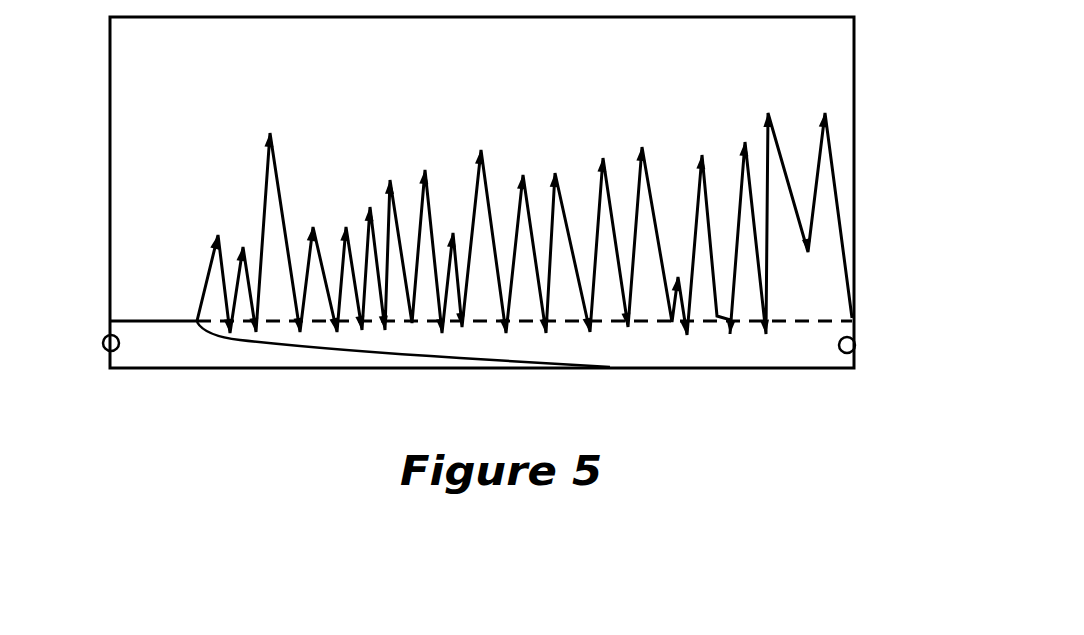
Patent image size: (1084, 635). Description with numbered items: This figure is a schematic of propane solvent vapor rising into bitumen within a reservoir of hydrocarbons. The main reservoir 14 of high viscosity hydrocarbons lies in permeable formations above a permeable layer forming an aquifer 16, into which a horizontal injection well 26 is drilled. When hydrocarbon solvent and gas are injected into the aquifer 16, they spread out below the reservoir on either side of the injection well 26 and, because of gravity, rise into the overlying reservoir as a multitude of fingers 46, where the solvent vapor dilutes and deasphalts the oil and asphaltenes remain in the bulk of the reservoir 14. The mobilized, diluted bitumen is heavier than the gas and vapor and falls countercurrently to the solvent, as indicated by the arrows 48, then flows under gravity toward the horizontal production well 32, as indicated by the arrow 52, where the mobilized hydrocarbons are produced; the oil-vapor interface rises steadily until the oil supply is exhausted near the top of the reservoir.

The main reservoir 14 is at (192, 91).
The aquifer 16 is at (582, 345).
The horizontal injection well 26 is at (855, 350).
The production well 32 is at (105, 352).
The fingers 46 is at (843, 183).
The arrows 48 is at (640, 342).
The arrow 52 is at (153, 370).